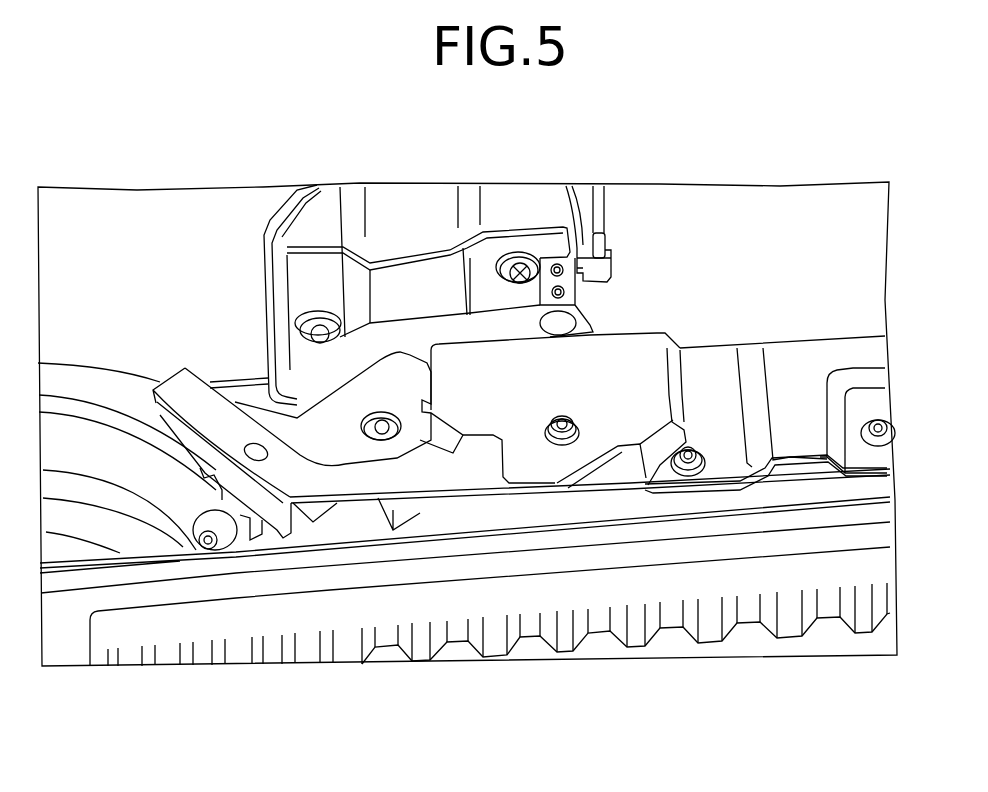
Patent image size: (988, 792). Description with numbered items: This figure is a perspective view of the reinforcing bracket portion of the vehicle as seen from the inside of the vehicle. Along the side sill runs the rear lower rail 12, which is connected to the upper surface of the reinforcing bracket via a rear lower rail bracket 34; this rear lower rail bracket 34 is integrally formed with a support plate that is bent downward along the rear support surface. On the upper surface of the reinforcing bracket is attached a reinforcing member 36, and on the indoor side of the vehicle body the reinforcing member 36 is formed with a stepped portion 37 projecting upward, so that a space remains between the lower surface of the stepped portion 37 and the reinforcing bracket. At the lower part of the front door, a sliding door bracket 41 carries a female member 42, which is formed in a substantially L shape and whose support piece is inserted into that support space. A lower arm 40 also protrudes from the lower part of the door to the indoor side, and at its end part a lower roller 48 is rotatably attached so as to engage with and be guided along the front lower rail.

The rear lower rail 12 is at (106, 384).
The rear lower rail bracket 34 is at (358, 480).
The reinforcing member 36 is at (552, 460).
The stepped portion 37 is at (605, 190).
The lower arm 40 is at (323, 413).
The sliding door bracket 41 is at (423, 252).
The female member 42 is at (523, 380).
The lower roller 48 is at (217, 550).